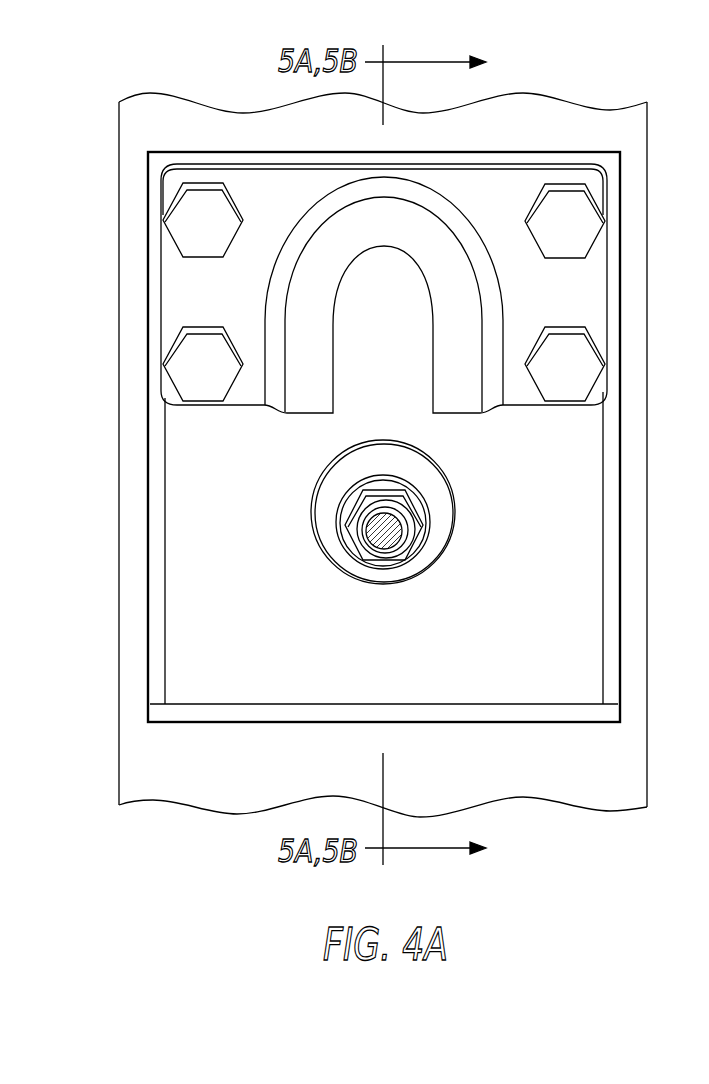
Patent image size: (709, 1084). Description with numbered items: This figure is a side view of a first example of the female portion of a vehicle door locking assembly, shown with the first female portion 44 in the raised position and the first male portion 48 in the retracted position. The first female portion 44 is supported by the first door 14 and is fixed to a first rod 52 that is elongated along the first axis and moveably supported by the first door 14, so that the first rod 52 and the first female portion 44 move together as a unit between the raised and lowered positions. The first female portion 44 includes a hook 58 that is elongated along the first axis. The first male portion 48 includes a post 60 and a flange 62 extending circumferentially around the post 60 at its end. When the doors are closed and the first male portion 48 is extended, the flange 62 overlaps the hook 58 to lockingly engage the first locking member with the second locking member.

The first door 14 is at (585, 130).
The first female portion 44 is at (502, 193).
The first male portion 48 is at (328, 572).
The first rod 52 is at (570, 488).
The hook 58 is at (400, 253).
The post 60 is at (387, 530).
The flange 62 is at (448, 482).